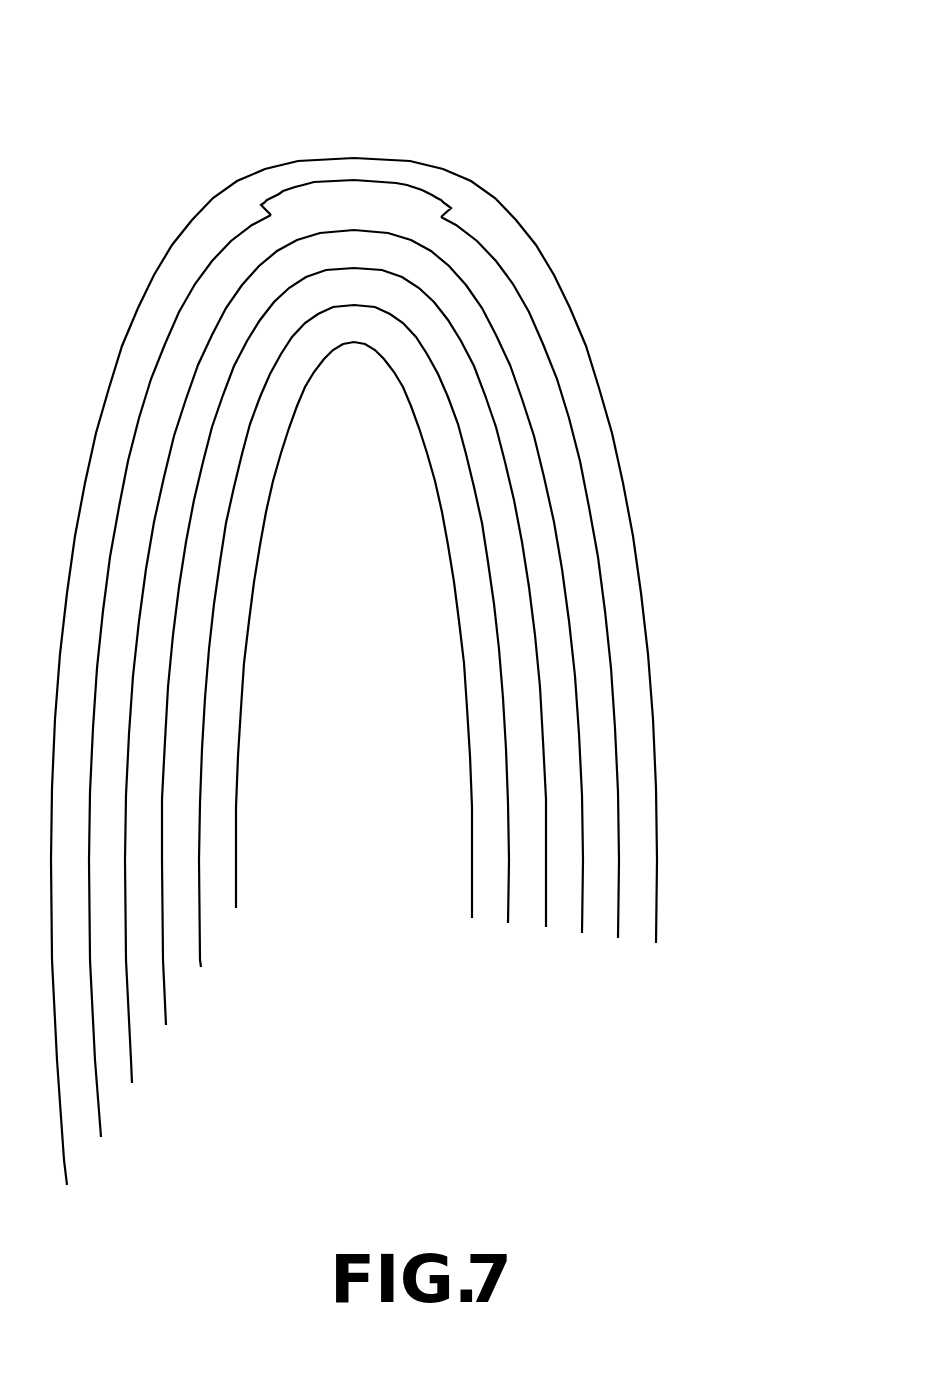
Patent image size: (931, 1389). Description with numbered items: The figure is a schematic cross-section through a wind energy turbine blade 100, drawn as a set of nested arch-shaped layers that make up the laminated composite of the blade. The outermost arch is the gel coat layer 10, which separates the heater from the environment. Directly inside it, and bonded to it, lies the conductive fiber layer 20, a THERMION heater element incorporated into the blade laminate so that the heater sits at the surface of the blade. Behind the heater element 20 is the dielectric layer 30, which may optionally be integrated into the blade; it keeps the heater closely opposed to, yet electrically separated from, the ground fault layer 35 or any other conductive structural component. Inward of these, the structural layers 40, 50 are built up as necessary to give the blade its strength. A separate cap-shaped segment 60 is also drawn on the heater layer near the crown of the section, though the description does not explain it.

The turbine blade 100 is at (355, 42).
The gel coat layer 10 is at (68, 1160).
The conductive fiber layer 20 is at (101, 1122).
The dielectric layer 30 is at (132, 1060).
The ground fault layer 35 is at (165, 1005).
The structural layer 40 is at (200, 948).
The structural layer 50 is at (235, 862).
The crown cap segment 60 is at (413, 188).